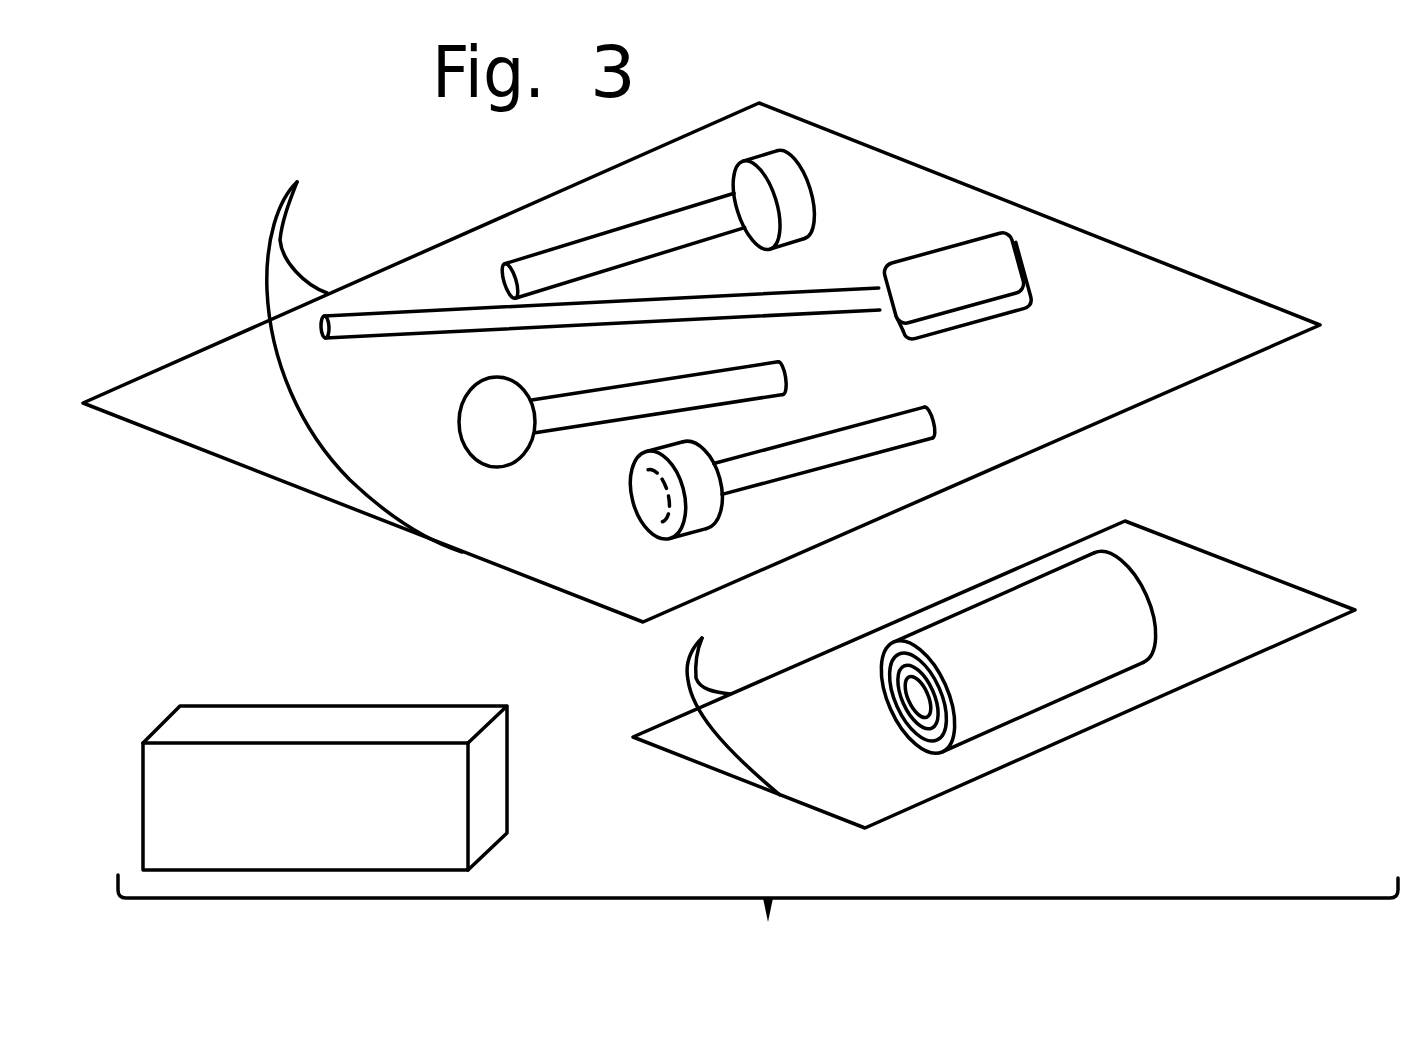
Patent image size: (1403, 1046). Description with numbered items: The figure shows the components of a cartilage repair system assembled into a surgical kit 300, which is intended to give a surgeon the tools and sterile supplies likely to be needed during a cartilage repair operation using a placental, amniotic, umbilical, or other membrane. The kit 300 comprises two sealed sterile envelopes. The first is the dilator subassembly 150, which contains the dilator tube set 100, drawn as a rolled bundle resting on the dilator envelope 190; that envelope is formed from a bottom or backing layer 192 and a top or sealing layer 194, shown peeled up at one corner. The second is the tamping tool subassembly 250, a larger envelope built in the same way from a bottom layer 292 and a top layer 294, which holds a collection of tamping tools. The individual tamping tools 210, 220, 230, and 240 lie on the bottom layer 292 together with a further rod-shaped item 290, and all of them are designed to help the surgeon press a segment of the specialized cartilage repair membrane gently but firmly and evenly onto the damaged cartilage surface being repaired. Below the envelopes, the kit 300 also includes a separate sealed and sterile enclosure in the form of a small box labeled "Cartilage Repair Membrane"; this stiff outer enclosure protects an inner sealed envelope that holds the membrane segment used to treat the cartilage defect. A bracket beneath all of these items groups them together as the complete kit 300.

The surgical kit 300 is at (740, 505).
The tamping tool subassembly 250 is at (1128, 115).
The bottom layer 292 is at (208, 425).
The top layer 294 is at (278, 193).
The rod instrument 290 is at (410, 303).
The tamping tool 210 is at (837, 173).
The tamping tool 240 is at (1033, 260).
The tamping tool 220 is at (460, 452).
The tamping tool 230 is at (620, 515).
The dilator subassembly 150 is at (1111, 774).
The dilator envelope 190 is at (1235, 593).
The bottom layer 192 is at (658, 753).
The top layer 194 is at (677, 669).
The dilator tube set 100 is at (1117, 677).